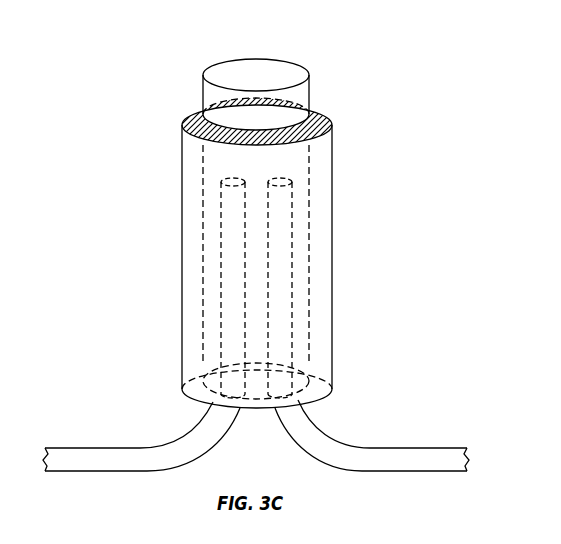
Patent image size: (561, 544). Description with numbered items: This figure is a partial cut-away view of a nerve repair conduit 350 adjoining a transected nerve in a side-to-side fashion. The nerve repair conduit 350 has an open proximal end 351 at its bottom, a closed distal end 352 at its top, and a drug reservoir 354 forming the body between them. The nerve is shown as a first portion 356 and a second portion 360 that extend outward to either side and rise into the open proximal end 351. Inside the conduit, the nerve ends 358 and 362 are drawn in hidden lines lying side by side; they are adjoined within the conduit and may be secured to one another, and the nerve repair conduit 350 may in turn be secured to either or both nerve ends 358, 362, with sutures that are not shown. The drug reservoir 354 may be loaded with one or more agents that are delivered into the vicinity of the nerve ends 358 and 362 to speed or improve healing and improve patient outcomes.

The nerve repair conduit 350 is at (201, 45).
The open proximal end 351 is at (318, 403).
The closed distal end 352 is at (303, 92).
The drug reservoir 354 is at (320, 182).
The first portion 356 is at (100, 458).
The nerve end 358 is at (230, 208).
The second portion 360 is at (412, 458).
The nerve end 362 is at (280, 275).